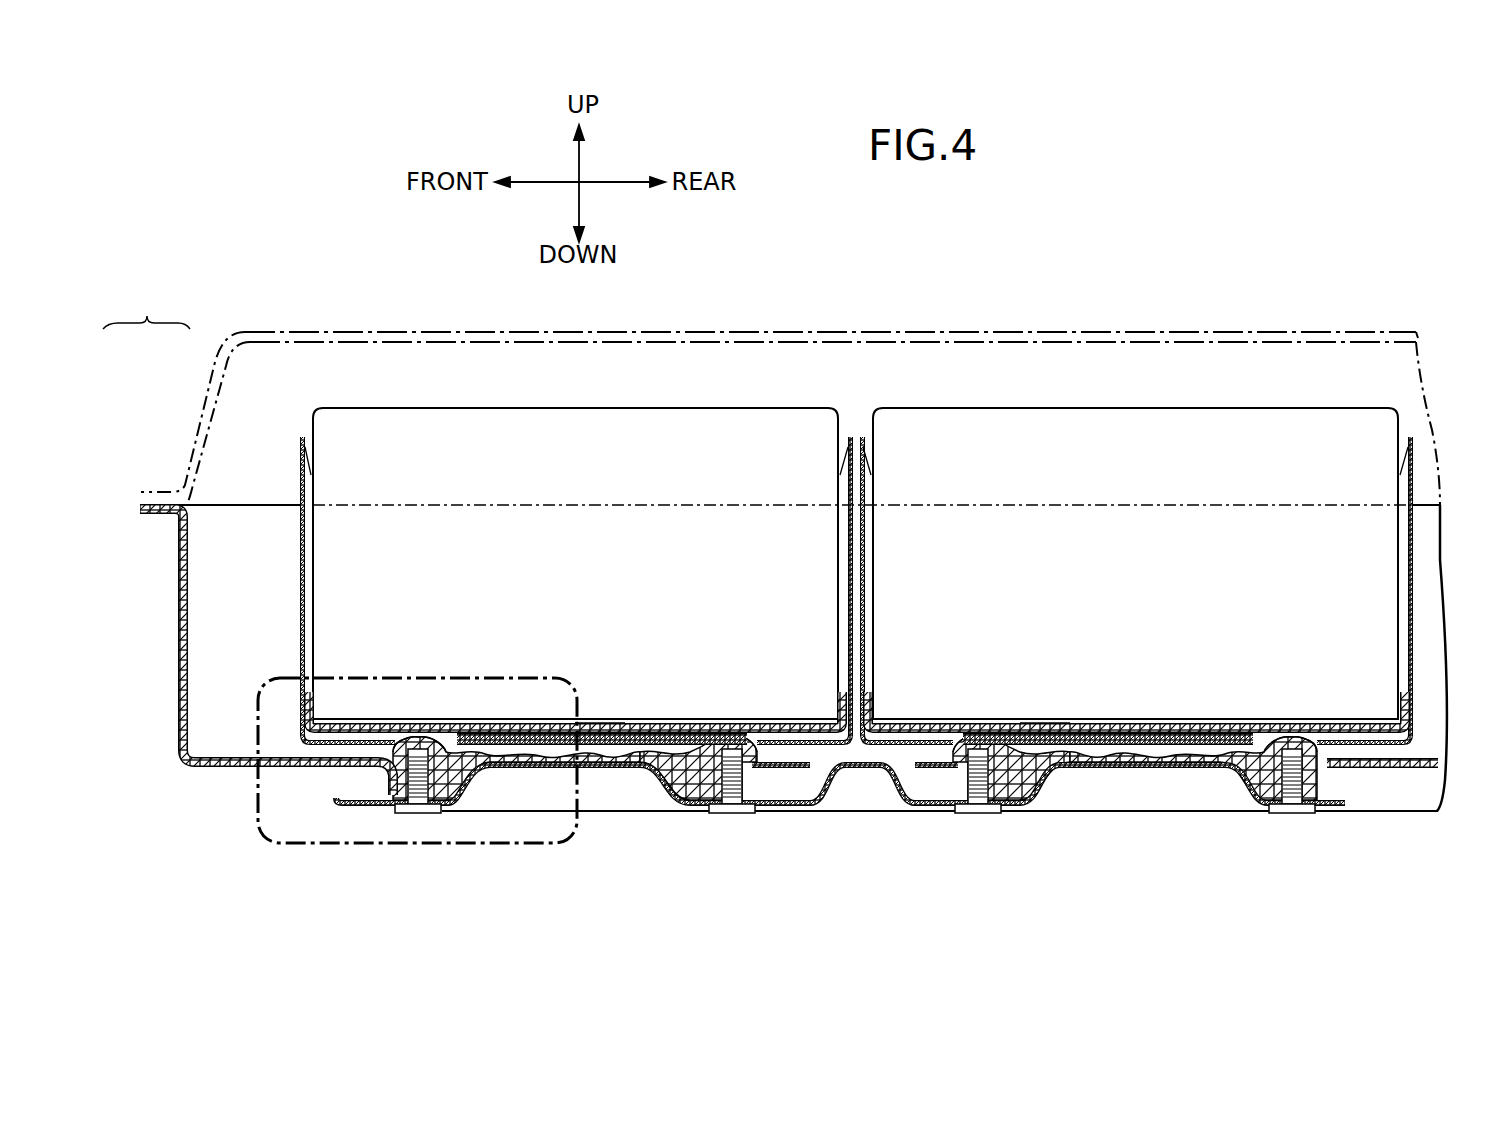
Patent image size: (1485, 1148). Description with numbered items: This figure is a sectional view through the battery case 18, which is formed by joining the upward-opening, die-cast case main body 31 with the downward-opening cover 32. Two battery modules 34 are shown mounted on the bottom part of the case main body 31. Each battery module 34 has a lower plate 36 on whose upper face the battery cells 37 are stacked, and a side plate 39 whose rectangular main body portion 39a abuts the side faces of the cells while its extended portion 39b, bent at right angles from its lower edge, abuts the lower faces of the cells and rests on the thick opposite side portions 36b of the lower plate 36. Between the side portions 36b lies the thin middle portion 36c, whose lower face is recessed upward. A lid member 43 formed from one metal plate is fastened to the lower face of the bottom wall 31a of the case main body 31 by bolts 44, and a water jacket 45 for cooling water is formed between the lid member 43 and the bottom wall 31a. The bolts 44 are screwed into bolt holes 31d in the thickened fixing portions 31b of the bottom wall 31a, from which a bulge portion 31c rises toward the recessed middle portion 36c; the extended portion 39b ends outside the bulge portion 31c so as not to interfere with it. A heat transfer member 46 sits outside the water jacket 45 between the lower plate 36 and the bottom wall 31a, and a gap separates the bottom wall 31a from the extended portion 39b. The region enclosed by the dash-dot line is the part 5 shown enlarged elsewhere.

The part 5 is at (563, 838).
The battery case 18 is at (146, 310).
The case main body 31 is at (174, 584).
The bottom wall 31a is at (791, 775).
The fixing portion 31b is at (468, 780).
The bulge portion 31c is at (420, 741).
The bolt hole 31d is at (409, 779).
The cover 32 is at (196, 431).
The battery module 34 is at (724, 398).
The lower plate 36 is at (712, 720).
The opposite side portion 36b is at (352, 722).
The middle portion 36c is at (600, 722).
The battery cell 37 is at (585, 417).
The side plate 39 is at (297, 614).
The main body portion 39a is at (300, 650).
The extended portion 39b is at (302, 749).
The lid member 43 is at (885, 778).
The bolt 44 is at (418, 815).
The water jacket 45 is at (602, 760).
The heat transfer member 46 is at (510, 722).